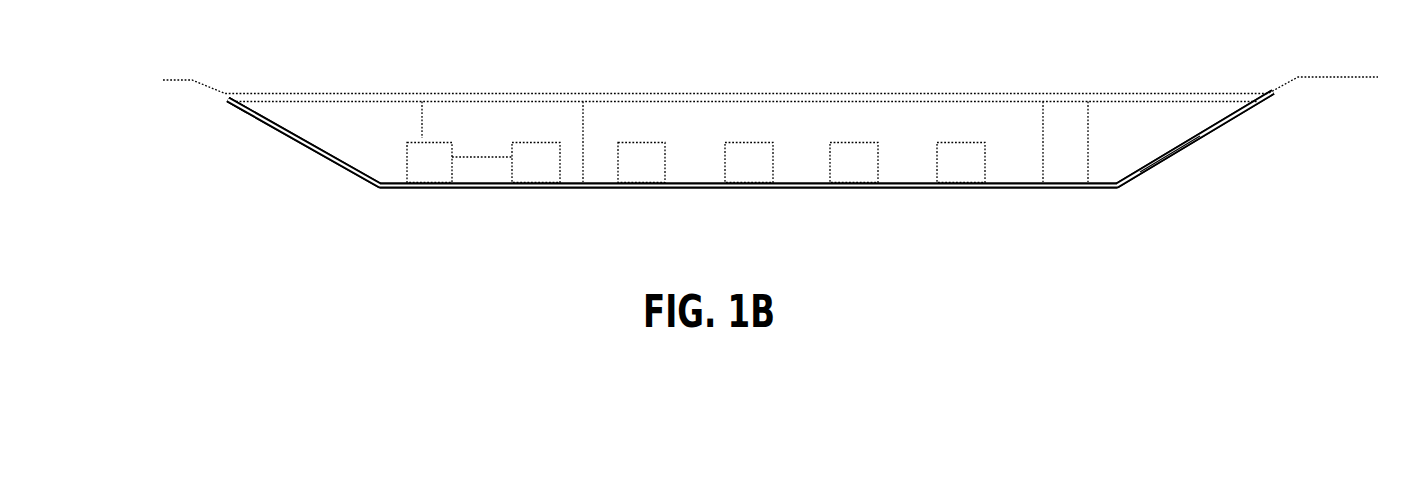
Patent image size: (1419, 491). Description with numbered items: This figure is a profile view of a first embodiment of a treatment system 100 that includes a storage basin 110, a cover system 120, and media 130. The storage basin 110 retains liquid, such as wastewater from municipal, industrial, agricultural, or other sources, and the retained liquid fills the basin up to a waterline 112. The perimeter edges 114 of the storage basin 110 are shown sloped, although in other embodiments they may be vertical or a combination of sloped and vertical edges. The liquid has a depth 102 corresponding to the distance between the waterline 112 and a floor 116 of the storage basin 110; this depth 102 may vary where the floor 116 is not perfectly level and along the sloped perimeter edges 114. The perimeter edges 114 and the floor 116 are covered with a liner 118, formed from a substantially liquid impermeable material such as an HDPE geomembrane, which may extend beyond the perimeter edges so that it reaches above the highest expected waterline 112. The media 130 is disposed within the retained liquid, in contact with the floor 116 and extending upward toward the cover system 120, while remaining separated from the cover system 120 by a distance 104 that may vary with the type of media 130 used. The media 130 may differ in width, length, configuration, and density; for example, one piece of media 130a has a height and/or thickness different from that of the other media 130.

The treatment system 100 is at (565, 28).
The depth 102 is at (583, 120).
The distance 104 is at (421, 113).
The storage basin 110 is at (337, 135).
The waterline 112 is at (238, 106).
The perimeter edges 114 is at (280, 134).
The floor 116 is at (487, 189).
The liner 118 is at (1160, 148).
The cover system 120 is at (680, 93).
The media 130 is at (638, 173).
The media 130a is at (1063, 185).